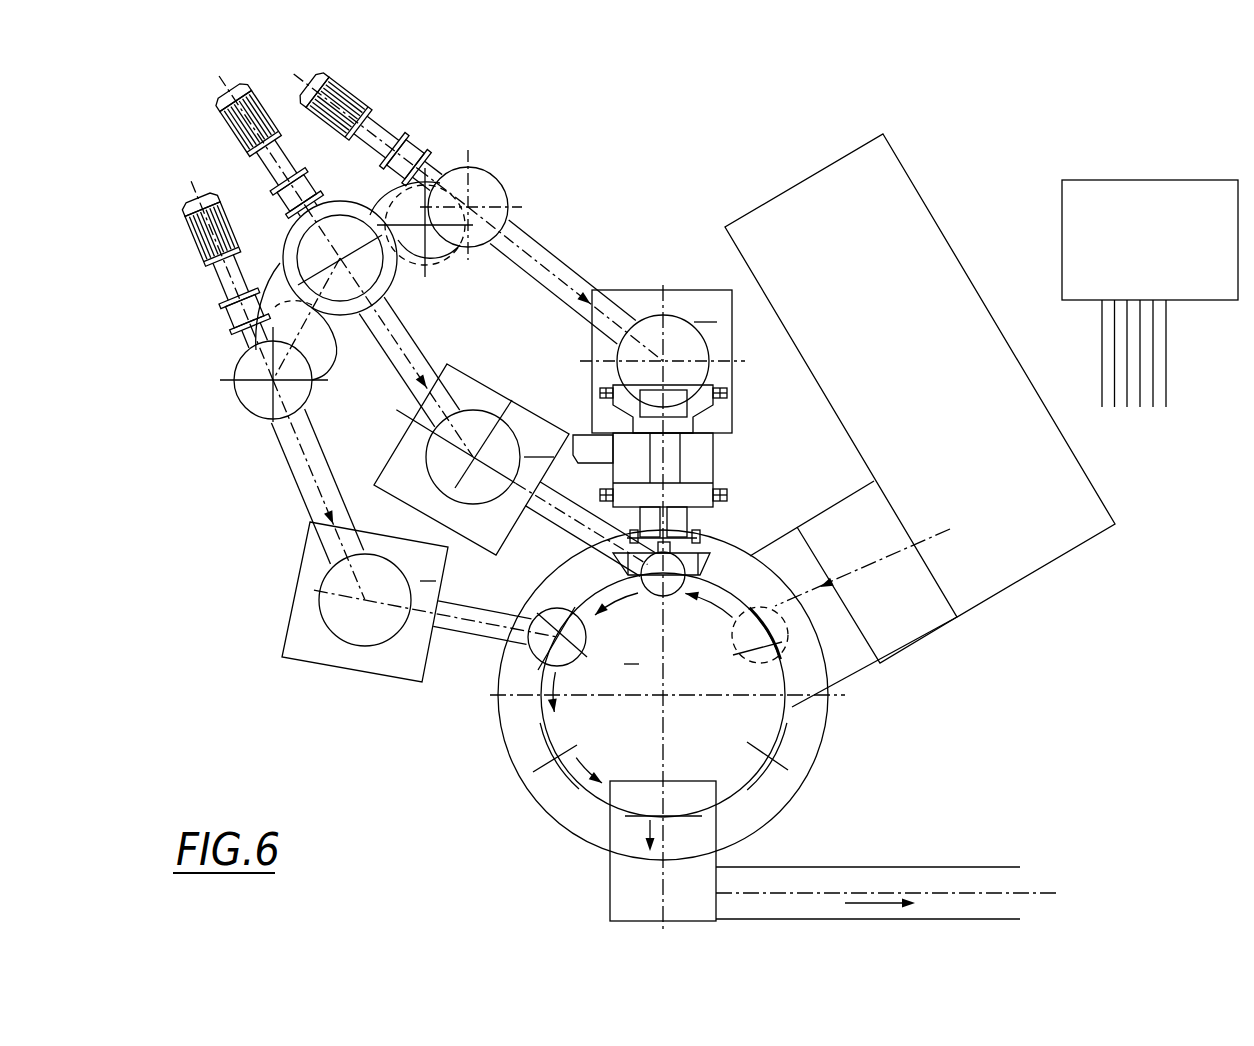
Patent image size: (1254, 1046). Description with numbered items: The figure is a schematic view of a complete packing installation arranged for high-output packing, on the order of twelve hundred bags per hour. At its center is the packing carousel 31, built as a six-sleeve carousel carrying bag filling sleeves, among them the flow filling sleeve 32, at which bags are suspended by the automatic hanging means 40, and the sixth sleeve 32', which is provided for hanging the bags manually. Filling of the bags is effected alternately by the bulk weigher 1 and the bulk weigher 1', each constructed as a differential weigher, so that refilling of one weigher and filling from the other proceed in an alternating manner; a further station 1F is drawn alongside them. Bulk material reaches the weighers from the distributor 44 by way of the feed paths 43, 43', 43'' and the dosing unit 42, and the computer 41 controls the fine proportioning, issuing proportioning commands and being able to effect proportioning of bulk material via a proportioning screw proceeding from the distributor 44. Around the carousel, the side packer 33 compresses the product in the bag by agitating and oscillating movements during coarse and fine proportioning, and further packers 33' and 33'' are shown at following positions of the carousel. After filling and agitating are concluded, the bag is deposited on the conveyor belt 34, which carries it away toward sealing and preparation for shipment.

The bulk weigher 1 is at (648, 421).
The bulk weigher 1' is at (514, 454).
The filling station E 1F is at (307, 615).
The packing carousel 31 is at (802, 732).
The flow filling sleeve 32 is at (825, 660).
The bag filling sleeve 32' is at (791, 780).
The side packer 33 is at (718, 531).
The transfer robot R-II 33' is at (469, 670).
The transfer robot R-III 33'' is at (488, 765).
The conveyor belt 34 is at (880, 875).
The automatic hanging means 40 is at (1015, 490).
The computer 41 is at (1165, 192).
The dosing unit 42 is at (514, 165).
The feed conveyor 43 is at (565, 283).
The feed conveyor 43' is at (407, 357).
The feed conveyor 43'' is at (305, 489).
The distributor 44 is at (337, 228).